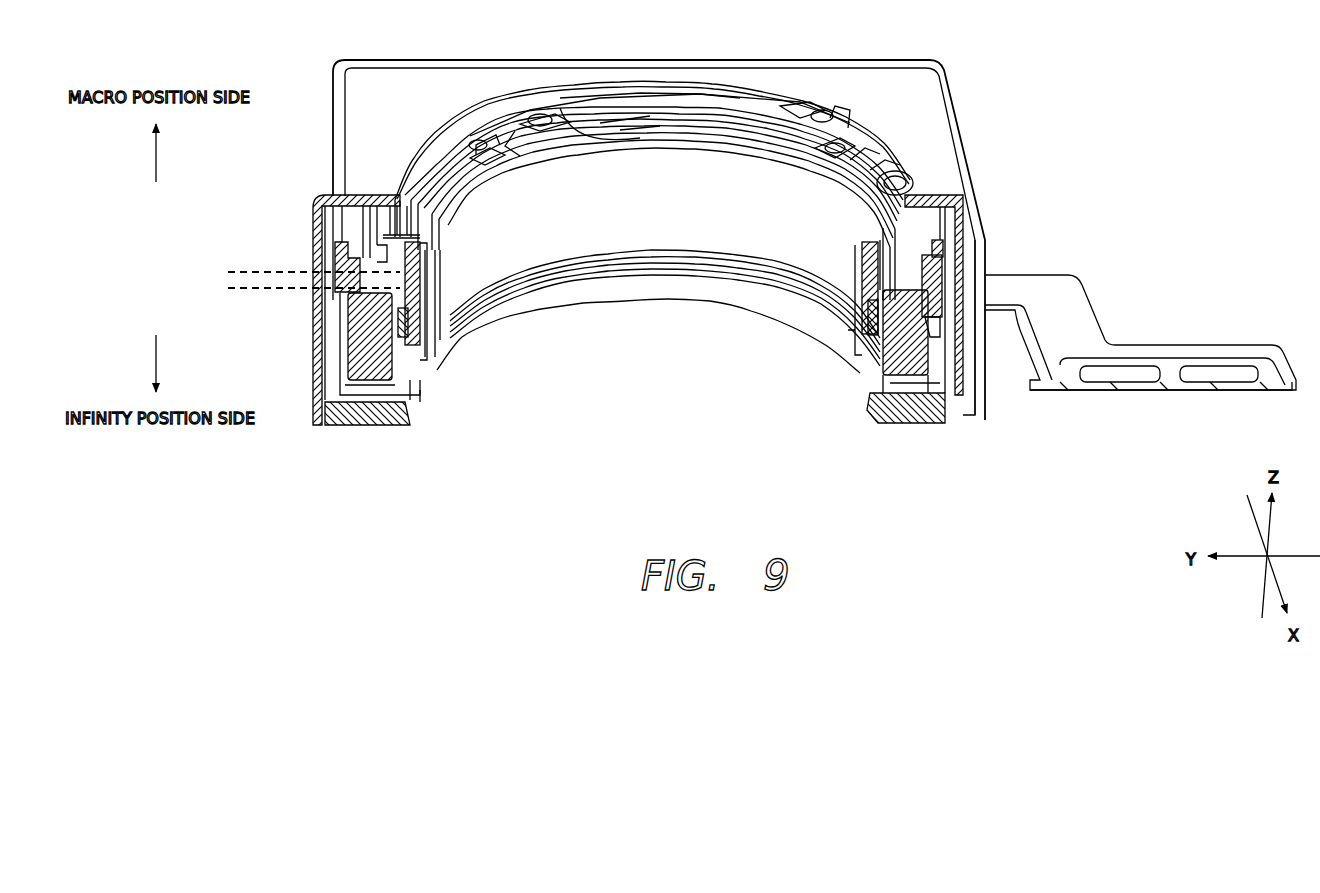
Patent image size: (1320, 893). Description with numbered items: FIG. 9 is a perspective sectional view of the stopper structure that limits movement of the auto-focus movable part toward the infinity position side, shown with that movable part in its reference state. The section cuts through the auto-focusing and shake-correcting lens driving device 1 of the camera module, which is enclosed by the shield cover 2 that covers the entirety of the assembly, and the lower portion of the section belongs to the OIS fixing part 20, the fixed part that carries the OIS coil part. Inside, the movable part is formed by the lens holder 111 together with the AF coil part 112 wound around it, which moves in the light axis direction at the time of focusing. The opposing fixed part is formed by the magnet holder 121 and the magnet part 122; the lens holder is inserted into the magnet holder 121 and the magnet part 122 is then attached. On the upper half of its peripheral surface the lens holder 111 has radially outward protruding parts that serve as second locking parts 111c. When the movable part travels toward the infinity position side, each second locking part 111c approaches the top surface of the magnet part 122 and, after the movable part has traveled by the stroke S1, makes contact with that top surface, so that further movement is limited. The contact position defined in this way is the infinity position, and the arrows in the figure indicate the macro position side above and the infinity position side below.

The lens driving device 1 is at (645, 97).
The shield cover 2 is at (957, 172).
The OIS fixing part 20 is at (878, 405).
The lens holder 111 is at (870, 288).
The second locking part 111c is at (383, 263).
The AF coil part 112 is at (878, 305).
The magnet holder 121 is at (920, 260).
The magnet part 122 is at (382, 352).
The stroke S1 is at (263, 350).